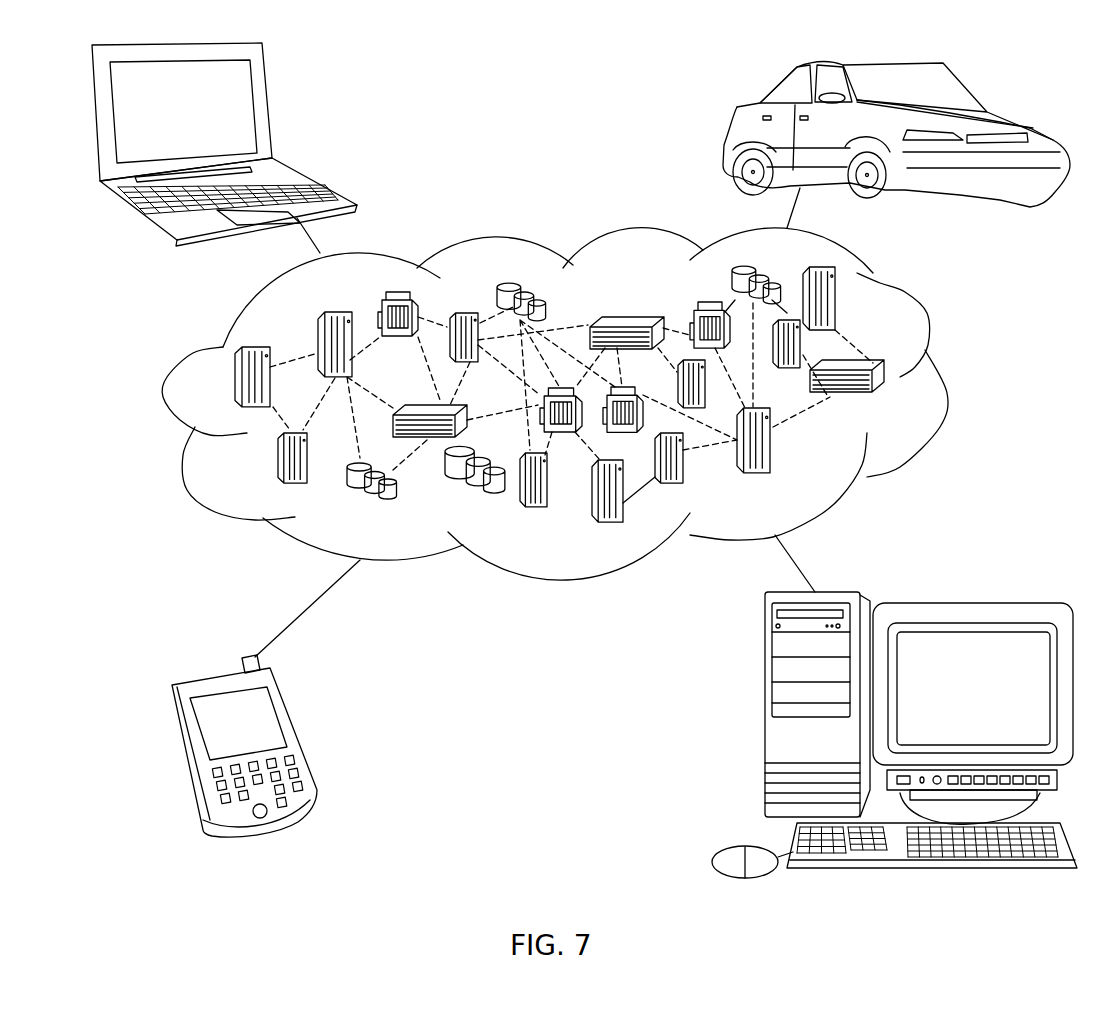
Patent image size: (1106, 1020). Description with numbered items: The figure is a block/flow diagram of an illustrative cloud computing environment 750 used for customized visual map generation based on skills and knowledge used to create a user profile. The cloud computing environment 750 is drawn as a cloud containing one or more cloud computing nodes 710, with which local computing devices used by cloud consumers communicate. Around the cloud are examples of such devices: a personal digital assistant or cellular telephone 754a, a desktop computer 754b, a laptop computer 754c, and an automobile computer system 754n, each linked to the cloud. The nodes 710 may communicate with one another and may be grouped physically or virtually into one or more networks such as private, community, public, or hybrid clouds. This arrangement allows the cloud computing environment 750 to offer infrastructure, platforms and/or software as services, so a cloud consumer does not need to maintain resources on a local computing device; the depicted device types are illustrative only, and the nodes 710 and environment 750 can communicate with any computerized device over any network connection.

The cloud computing environment 750 is at (925, 310).
The cloud computing nodes 710 is at (912, 400).
The personal digital assistant (PDA) or cellular telephone 754a is at (293, 723).
The desktop computer 754b is at (765, 720).
The laptop computer 754c is at (270, 103).
The automobile computer system 754n is at (735, 108).